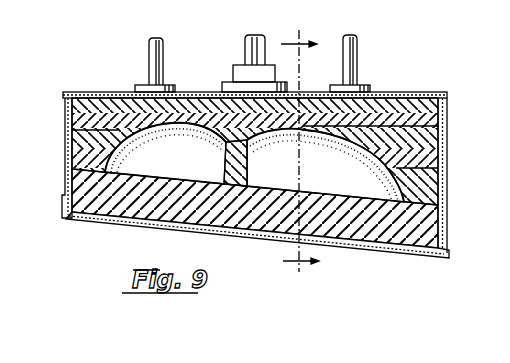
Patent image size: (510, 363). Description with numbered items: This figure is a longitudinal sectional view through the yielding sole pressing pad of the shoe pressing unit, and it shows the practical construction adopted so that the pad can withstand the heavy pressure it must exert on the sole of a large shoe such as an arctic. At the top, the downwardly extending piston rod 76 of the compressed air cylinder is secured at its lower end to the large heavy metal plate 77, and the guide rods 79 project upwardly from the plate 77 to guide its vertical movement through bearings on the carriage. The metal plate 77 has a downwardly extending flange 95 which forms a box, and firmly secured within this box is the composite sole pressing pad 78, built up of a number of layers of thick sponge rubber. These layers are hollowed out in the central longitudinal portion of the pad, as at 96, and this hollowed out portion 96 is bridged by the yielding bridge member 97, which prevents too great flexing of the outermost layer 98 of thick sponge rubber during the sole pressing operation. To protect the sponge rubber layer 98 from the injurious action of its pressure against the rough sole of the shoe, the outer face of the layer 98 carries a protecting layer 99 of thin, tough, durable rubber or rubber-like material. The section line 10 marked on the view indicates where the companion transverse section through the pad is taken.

The section line 10 is at (300, 156).
The piston rod 76 is at (246, 47).
The metal plate 77 is at (413, 93).
The sole pressing pad 78 is at (60, 167).
The guide rods 79 is at (148, 56).
The flange 95 is at (447, 118).
The hollowed out portion 96 is at (254, 162).
The yielding bridge member 97 is at (224, 161).
The outermost layer 98 is at (147, 222).
The protecting layer 99 is at (362, 250).